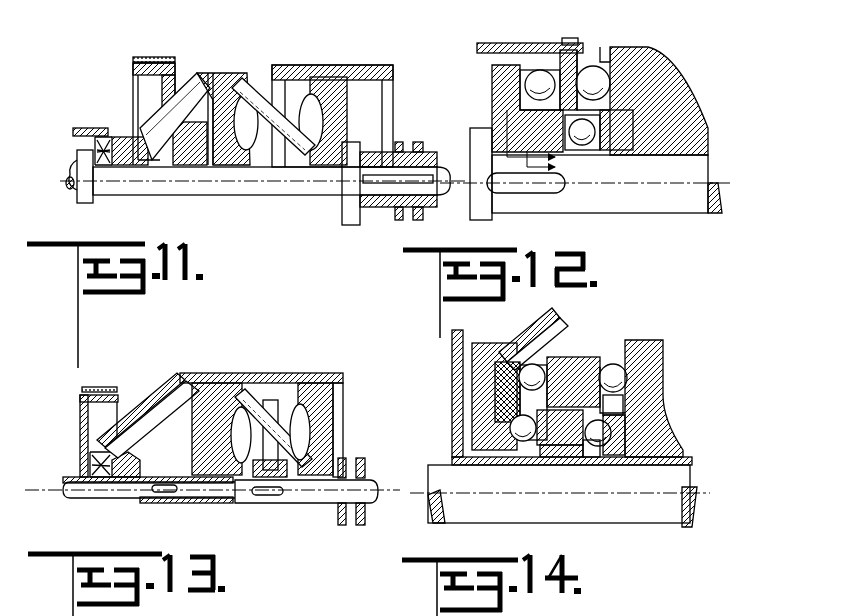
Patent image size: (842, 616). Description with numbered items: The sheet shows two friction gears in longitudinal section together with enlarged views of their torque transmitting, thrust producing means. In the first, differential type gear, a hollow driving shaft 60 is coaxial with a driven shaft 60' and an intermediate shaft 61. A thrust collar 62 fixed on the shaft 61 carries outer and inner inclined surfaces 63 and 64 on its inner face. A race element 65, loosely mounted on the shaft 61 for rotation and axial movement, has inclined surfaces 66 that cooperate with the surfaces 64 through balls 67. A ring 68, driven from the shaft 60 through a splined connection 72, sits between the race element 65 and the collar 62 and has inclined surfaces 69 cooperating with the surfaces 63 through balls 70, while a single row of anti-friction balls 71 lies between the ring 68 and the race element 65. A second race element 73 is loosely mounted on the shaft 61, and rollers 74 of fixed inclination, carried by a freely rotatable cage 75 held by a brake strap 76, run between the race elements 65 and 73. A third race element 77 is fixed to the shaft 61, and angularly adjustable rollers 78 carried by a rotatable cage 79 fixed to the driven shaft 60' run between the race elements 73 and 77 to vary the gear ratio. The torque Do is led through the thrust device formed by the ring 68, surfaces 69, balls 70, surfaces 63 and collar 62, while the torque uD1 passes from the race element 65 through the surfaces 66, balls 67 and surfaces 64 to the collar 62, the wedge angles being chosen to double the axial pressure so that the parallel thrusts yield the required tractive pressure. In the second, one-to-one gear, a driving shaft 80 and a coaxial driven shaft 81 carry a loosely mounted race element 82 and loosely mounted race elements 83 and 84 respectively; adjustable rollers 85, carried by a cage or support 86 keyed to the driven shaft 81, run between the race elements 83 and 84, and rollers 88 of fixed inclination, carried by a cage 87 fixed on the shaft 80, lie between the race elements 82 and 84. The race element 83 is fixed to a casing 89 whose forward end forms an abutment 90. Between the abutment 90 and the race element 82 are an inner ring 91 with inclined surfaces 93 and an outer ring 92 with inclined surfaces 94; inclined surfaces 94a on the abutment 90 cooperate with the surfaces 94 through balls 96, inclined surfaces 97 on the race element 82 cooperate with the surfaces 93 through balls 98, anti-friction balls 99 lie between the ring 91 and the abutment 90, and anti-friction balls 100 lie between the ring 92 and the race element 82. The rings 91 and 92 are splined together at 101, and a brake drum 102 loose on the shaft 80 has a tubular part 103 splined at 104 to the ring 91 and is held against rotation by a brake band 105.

In FIG. 11, the driving element 60 is at (81, 154).
In FIG. 12, the driving element 60 is at (530, 34).
In FIG. 11, the driven shaft 60' is at (406, 189).
In FIG. 11, the intermediate shaft 61 is at (215, 185).
In FIG. 12, the intermediate shaft 61 is at (707, 163).
In FIG. 12, the thrust collar 62 is at (493, 128).
In FIG. 12, the outer inclined surfaces 63 is at (523, 68).
In FIG. 12, the inner inclined surfaces 64 is at (577, 147).
In FIG. 11, the race element 65 is at (115, 135).
In FIG. 12, the race element 65 is at (667, 107).
In FIG. 12, the inclined surfaces 66 is at (600, 148).
In FIG. 12, the balls 67 is at (580, 143).
In FIG. 12, the ring 68 is at (593, 67).
In FIG. 12, the inclined surfaces 69 is at (557, 67).
In FIG. 12, the balls 70 is at (538, 73).
In FIG. 12, the anti-friction balls 71 is at (612, 50).
In FIG. 12, the splined driving connection 72 is at (575, 42).
In FIG. 11, the second race element 73 is at (233, 63).
In FIG. 11, the rollers 74 is at (200, 63).
In FIG. 11, the cage 75 is at (137, 68).
In FIG. 11, the brake strap 76 is at (167, 57).
In FIG. 11, the third race element 77 is at (330, 78).
In FIG. 11, the rollers 78 is at (302, 147).
In FIG. 11, the rotatable cage 79 is at (288, 65).
In FIG. 12, the torque D0 Do is at (492, 115).
In FIG. 12, the torque uD-1 uD1 is at (637, 88).
In FIG. 13, the driving shaft 80 is at (63, 487).
In FIG. 14, the driving shaft 80 is at (680, 480).
In FIG. 13, the driven shaft 81 is at (323, 497).
In FIG. 13, the race element 82 is at (113, 453).
In FIG. 14, the race element 82 is at (658, 368).
In FIG. 13, the race element 83 is at (327, 415).
In FIG. 13, the race element 84 is at (217, 385).
In FIG. 13, the rollers 85 is at (277, 428).
In FIG. 13, the bearing seat 86 is at (290, 483).
In FIG. 13, the cage 87 is at (177, 472).
In FIG. 13, the rollers 88 is at (175, 418).
In FIG. 13, the casing 89 is at (317, 360).
In FIG. 14, the abutment 90 is at (478, 420).
In FIG. 14, the inner ring 91 is at (540, 457).
In FIG. 14, the outer ring 92 is at (575, 360).
In FIG. 14, the inclined surfaces 93 is at (614, 405).
In FIG. 14, the inclined surfaces 94 is at (545, 363).
In FIG. 14, the inclined surfaces 94a is at (526, 382).
In FIG. 14, the balls 96 is at (531, 392).
In FIG. 14, the inclined surfaces 97 is at (590, 436).
In FIG. 14, the balls 98 is at (598, 446).
In FIG. 14, the anti-friction balls 99 is at (522, 433).
In FIG. 14, the anti-friction balls 100 is at (610, 362).
In FIG. 14, the spline 101 is at (560, 450).
In FIG. 13, the brake drum 102 is at (80, 418).
In FIG. 14, the brake drum 102 is at (453, 373).
In FIG. 14, the tubular part 103 is at (482, 463).
In FIG. 14, the spline 104 is at (582, 457).
In FIG. 13, the brake band 105 is at (108, 390).